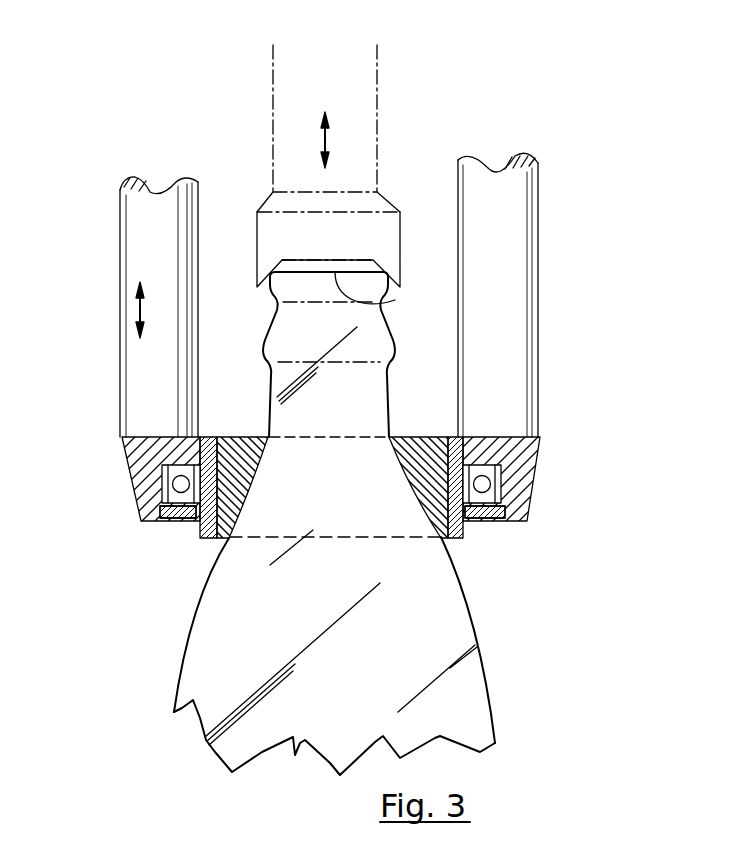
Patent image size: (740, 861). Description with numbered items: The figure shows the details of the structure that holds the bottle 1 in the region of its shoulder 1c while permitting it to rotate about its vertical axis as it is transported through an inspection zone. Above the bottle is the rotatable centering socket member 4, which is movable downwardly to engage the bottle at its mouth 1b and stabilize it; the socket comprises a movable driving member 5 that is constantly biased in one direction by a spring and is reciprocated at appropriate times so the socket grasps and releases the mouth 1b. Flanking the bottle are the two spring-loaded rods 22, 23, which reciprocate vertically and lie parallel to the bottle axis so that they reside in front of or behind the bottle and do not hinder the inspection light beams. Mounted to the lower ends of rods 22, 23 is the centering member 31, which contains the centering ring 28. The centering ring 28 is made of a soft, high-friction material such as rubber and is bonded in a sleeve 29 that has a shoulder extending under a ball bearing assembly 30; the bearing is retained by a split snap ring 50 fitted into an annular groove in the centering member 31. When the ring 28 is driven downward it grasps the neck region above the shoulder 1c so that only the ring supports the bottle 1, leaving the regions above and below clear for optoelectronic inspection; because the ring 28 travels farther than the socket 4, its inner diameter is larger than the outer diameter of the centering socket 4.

The bottle 1 is at (208, 675).
The mouth 1b is at (395, 302).
The shoulder 1c is at (238, 548).
The centering socket member 4 is at (256, 219).
The movable driving member 5 is at (273, 47).
The spring loaded rod 22 is at (145, 360).
The spring loaded rod 23 is at (520, 335).
The centering ring 28 is at (465, 534).
The sleeve 29 is at (186, 538).
The ball bearing assembly 30 is at (500, 479).
The centering member 31 is at (541, 437).
The split snap ring 50 is at (500, 517).